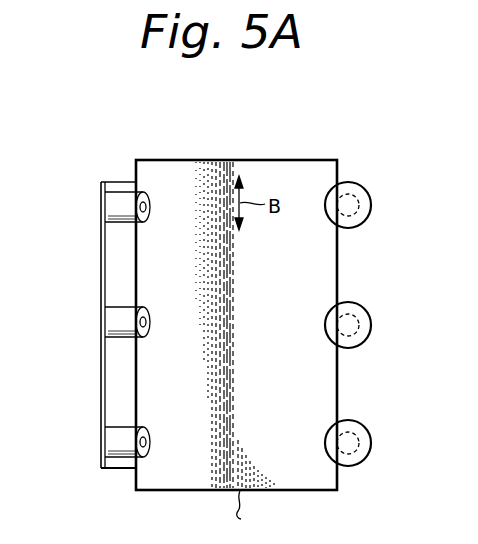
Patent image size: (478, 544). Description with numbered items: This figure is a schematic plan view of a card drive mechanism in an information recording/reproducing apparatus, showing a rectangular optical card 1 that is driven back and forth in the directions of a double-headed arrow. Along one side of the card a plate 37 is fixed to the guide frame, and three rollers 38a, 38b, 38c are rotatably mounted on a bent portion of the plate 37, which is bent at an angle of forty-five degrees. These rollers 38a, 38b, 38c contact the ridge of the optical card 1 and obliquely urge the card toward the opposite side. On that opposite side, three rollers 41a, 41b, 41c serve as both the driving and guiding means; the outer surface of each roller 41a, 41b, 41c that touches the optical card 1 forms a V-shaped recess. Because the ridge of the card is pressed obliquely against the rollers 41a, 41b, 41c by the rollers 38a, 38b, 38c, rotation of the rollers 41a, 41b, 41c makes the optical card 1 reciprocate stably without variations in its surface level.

The optical card 1 is at (187, 240).
The plate 37 is at (118, 393).
The roller 38a is at (113, 440).
The roller 38b is at (113, 322).
The roller 38c is at (113, 207).
The roller 41a is at (371, 446).
The roller 41b is at (371, 328).
The roller 41c is at (371, 208).